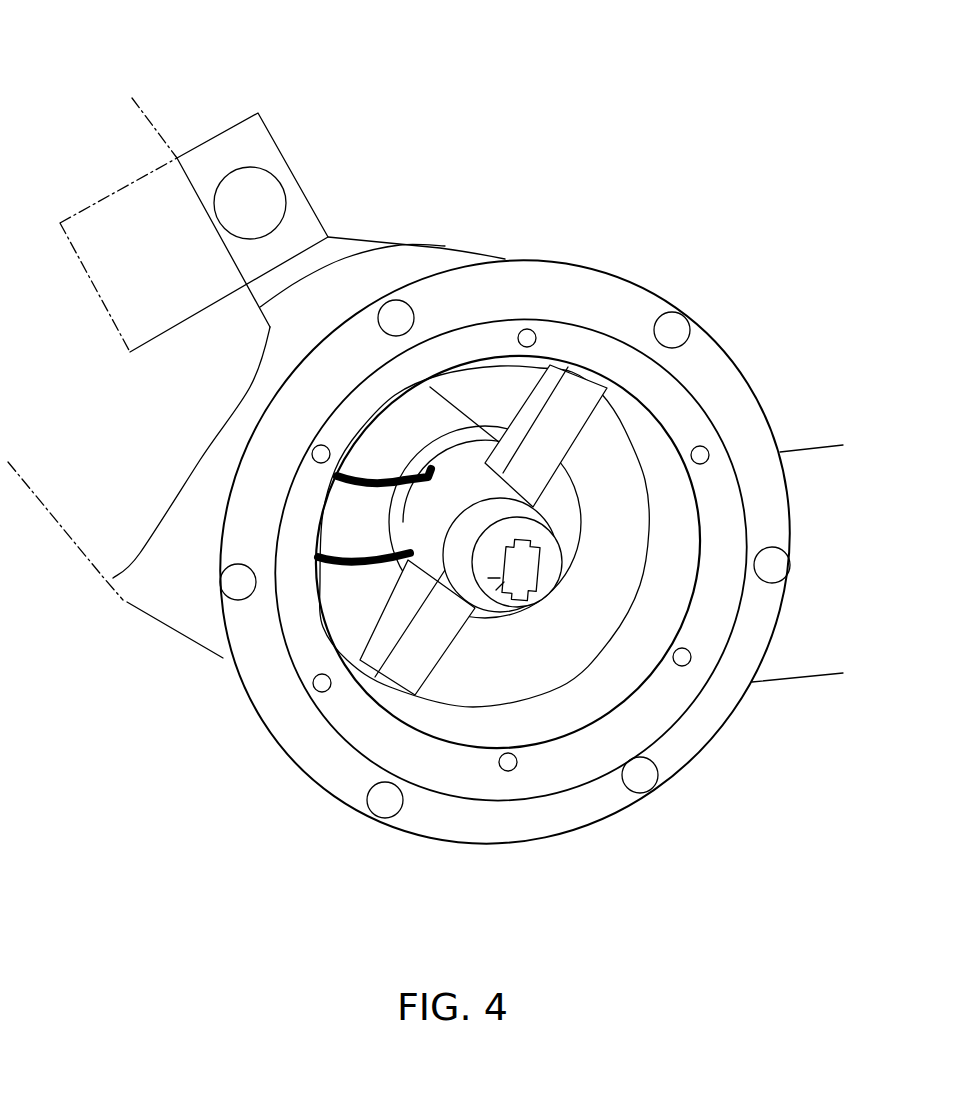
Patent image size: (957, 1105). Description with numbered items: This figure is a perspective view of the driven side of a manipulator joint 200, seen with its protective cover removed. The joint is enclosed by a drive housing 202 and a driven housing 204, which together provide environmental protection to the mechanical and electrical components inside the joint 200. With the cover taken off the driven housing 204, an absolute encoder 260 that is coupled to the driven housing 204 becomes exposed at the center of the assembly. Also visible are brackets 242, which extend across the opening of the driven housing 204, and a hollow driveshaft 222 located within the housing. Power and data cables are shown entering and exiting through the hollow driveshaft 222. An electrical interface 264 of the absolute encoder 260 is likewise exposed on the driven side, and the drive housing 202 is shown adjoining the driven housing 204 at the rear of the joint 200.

The manipulator joint 200 is at (567, 100).
The drive housing 202 is at (356, 237).
The driven housing 204 is at (465, 253).
The hollow driveshaft 222 is at (458, 425).
The brackets 242 is at (565, 433).
The absolute encoder 260 is at (517, 500).
The electrical interface 264 is at (542, 577).